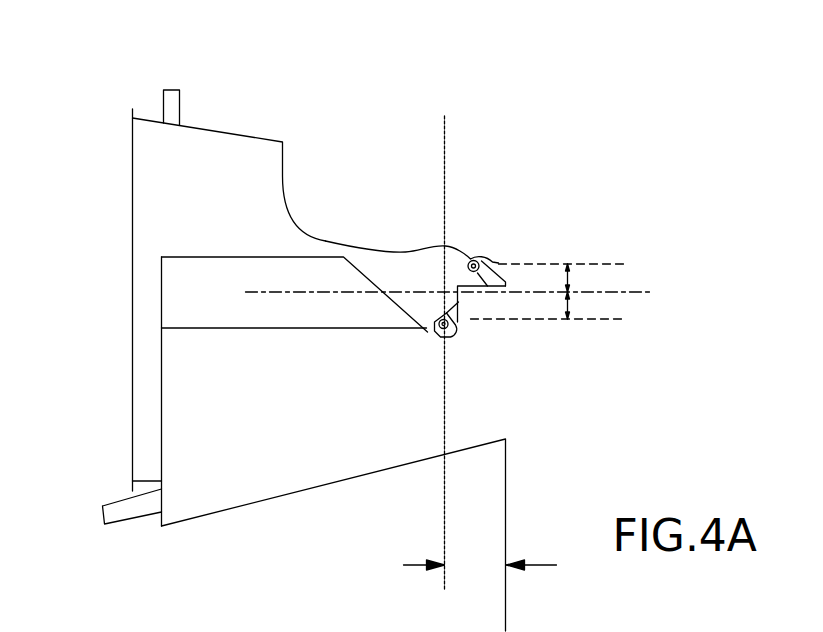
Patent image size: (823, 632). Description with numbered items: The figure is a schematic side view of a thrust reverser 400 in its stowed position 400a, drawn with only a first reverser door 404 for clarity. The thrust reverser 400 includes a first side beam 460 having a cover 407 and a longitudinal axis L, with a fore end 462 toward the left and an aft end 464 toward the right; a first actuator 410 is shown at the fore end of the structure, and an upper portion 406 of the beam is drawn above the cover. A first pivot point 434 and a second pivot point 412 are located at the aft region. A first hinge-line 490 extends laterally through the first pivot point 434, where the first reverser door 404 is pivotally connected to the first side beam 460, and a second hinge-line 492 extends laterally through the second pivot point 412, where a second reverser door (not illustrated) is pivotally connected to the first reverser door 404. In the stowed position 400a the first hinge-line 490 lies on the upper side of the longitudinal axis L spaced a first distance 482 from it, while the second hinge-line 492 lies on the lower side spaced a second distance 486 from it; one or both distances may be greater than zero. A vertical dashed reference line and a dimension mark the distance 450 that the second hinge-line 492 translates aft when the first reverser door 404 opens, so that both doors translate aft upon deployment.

The thrust reverser 400 is at (128, 37).
The stowed position 400a is at (565, 142).
The first reverser door 404 is at (290, 497).
The upper body portion 406 is at (158, 278).
The cover 407 is at (177, 308).
The first actuator 410 is at (123, 523).
The second pivot point 412 is at (448, 323).
The first pivot point 434 is at (494, 262).
The distance 450 is at (556, 566).
The first side beam 460 is at (371, 263).
The fore end 462 is at (140, 237).
The aft end 464 is at (416, 270).
The first distance 482 is at (567, 265).
The second distance 486 is at (568, 320).
The first hinge-line 490 is at (468, 258).
The second hinge-line 492 is at (448, 330).
The longitudinal axis L is at (660, 293).